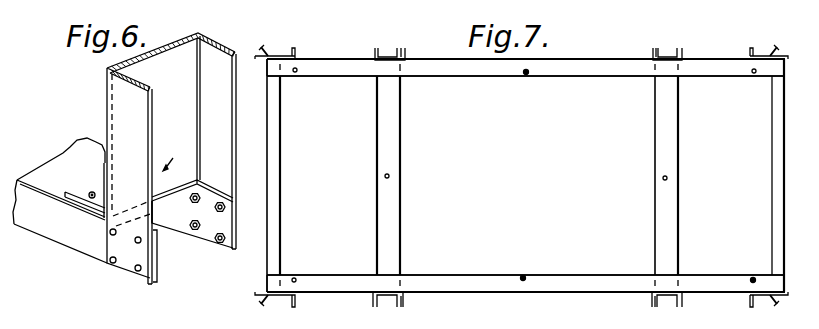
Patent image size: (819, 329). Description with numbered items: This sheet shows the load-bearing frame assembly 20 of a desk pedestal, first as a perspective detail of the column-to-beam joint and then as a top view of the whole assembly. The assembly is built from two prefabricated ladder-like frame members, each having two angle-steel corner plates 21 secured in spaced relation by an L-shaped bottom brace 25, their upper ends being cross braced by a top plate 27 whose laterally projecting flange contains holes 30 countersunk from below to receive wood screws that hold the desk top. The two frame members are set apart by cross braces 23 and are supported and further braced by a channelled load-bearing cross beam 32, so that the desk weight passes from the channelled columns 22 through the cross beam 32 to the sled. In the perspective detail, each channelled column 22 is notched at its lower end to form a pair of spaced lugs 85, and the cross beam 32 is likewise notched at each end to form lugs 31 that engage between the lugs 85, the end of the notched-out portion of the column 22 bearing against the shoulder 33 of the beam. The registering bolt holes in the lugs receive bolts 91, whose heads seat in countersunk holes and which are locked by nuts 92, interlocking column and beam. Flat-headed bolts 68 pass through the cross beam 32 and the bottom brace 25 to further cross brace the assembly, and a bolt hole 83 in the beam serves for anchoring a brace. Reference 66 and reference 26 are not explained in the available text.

In FIG. 7, the load-bearing frame assembly 20 is at (593, 59).
In FIG. 7, the corner plates 21 is at (282, 55).
In FIG. 6, the channelled column 22 is at (217, 55).
In FIG. 7, the channelled column 22 is at (405, 55).
In FIG. 7, the cross braces 23 is at (281, 172).
In FIG. 6, the L-shaped bottom brace 25 is at (78, 193).
In FIG. 7, the pin 26 is at (266, 48).
In FIG. 7, the top plate 27 is at (618, 78).
In FIG. 7, the holes 30 is at (753, 277).
In FIG. 6, the lugs 31 is at (210, 244).
In FIG. 7, the lugs 31 is at (392, 53).
In FIG. 6, the load-bearing cross beam 32 is at (68, 163).
In FIG. 7, the load-bearing cross beam 32 is at (401, 201).
In FIG. 6, the shoulder 33 is at (163, 204).
In FIG. 6, the inner face 66 is at (179, 155).
In FIG. 6, the flat-headed bolts 68 is at (89, 193).
In FIG. 7, the bolt hole 83 is at (390, 176).
In FIG. 6, the lugs 85 is at (133, 253).
In FIG. 6, the bolts 91 is at (137, 265).
In FIG. 6, the nuts 92 is at (218, 210).